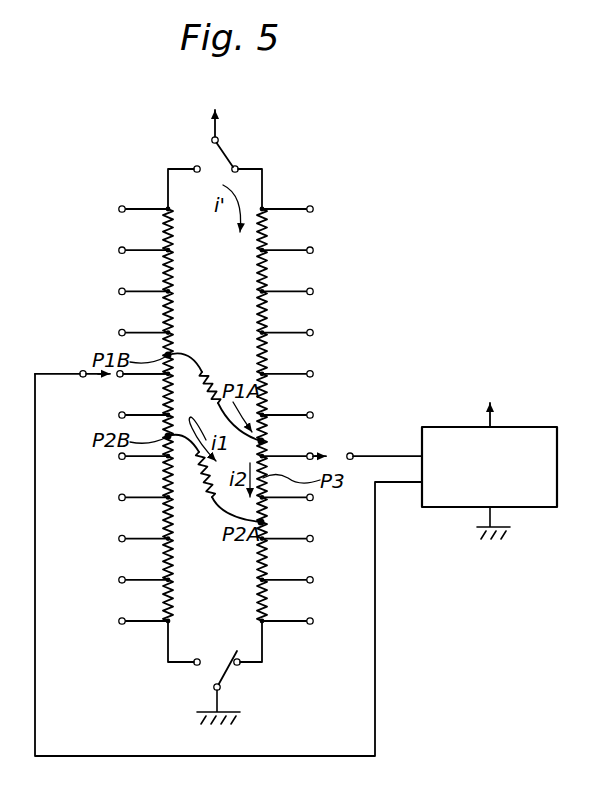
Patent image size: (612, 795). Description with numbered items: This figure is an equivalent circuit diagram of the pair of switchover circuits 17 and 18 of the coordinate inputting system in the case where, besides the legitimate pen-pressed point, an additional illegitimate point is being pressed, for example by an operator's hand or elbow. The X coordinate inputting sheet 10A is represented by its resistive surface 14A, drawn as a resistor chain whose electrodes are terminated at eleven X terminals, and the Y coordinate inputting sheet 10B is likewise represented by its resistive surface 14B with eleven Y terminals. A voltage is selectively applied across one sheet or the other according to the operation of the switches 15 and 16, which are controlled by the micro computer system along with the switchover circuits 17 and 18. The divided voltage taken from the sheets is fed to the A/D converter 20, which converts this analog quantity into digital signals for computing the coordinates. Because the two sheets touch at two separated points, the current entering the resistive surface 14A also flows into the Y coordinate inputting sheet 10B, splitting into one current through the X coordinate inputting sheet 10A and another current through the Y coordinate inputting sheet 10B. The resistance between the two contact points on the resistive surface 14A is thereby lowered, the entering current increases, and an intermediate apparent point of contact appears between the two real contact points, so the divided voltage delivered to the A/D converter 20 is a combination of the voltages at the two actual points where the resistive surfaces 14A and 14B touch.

The X coordinate inputting sheet 10A is at (264, 168).
The Y coordinate inputting sheet 10B is at (168, 173).
The resistive surface of the X coordinate inputting sheet 14A is at (262, 333).
The resistive surface of the Y coordinate inputting sheet 14B is at (170, 288).
The switch 15 is at (224, 152).
The switch 16 is at (232, 676).
The switchover circuit 17 is at (322, 268).
The switchover circuit 18 is at (116, 270).
The A/D converter 20 is at (541, 426).